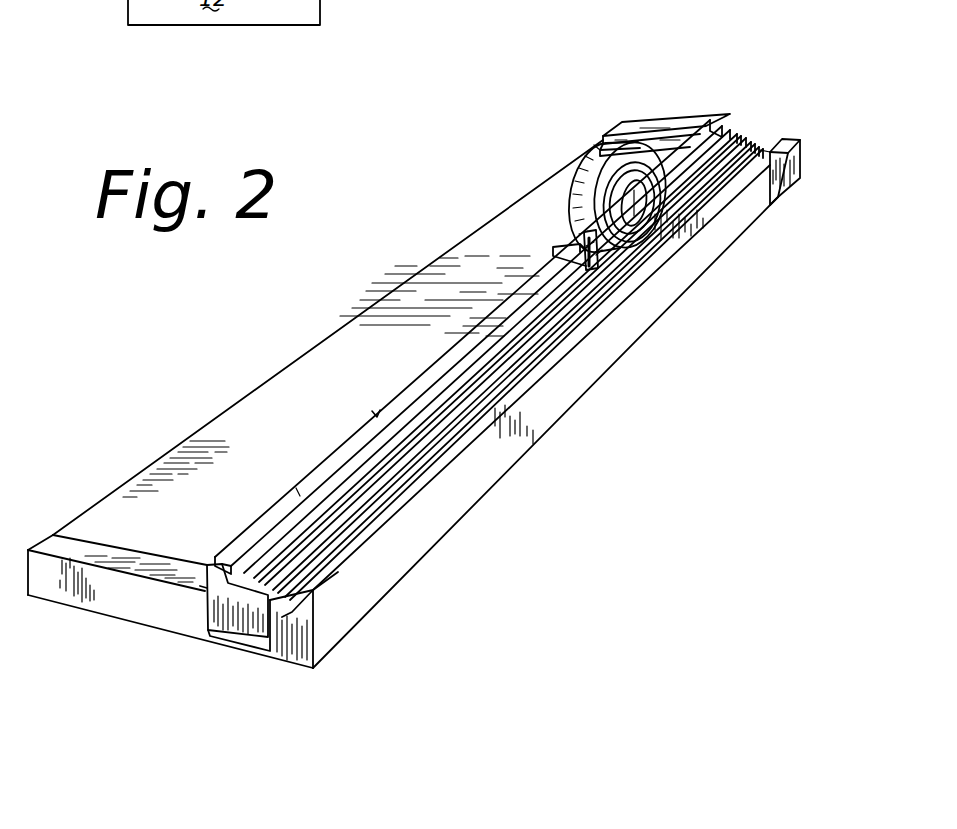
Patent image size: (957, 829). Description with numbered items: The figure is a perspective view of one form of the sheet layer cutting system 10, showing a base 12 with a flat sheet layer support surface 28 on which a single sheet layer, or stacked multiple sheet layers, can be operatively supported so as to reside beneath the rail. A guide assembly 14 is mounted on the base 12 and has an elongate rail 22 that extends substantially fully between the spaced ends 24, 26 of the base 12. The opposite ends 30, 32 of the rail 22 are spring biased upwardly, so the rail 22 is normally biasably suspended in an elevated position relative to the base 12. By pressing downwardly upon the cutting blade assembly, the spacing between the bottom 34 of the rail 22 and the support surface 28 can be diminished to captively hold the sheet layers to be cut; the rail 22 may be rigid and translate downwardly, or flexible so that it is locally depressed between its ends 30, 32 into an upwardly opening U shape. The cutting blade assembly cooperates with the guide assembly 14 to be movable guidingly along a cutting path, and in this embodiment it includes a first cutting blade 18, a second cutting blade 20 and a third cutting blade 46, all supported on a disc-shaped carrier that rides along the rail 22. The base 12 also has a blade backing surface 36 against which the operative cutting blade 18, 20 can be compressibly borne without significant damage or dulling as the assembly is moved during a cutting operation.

The sheet layer cutting system 10 is at (824, 116).
The base 12 is at (482, 297).
The guide assembly 14 is at (377, 417).
The first cutting blade 18 is at (645, 246).
The second cutting blade 20 is at (631, 202).
The elongate rail 22 is at (525, 352).
The end of the base 24 is at (122, 602).
The end of the base 26 is at (677, 123).
The sheet layer support surface 28 is at (177, 490).
The end of the rail 30 is at (247, 627).
The end of the rail 32 is at (772, 130).
The bottom of the rail 34 is at (478, 422).
The blade backing surface 36 is at (362, 535).
The third cutting blade 46 is at (634, 202).